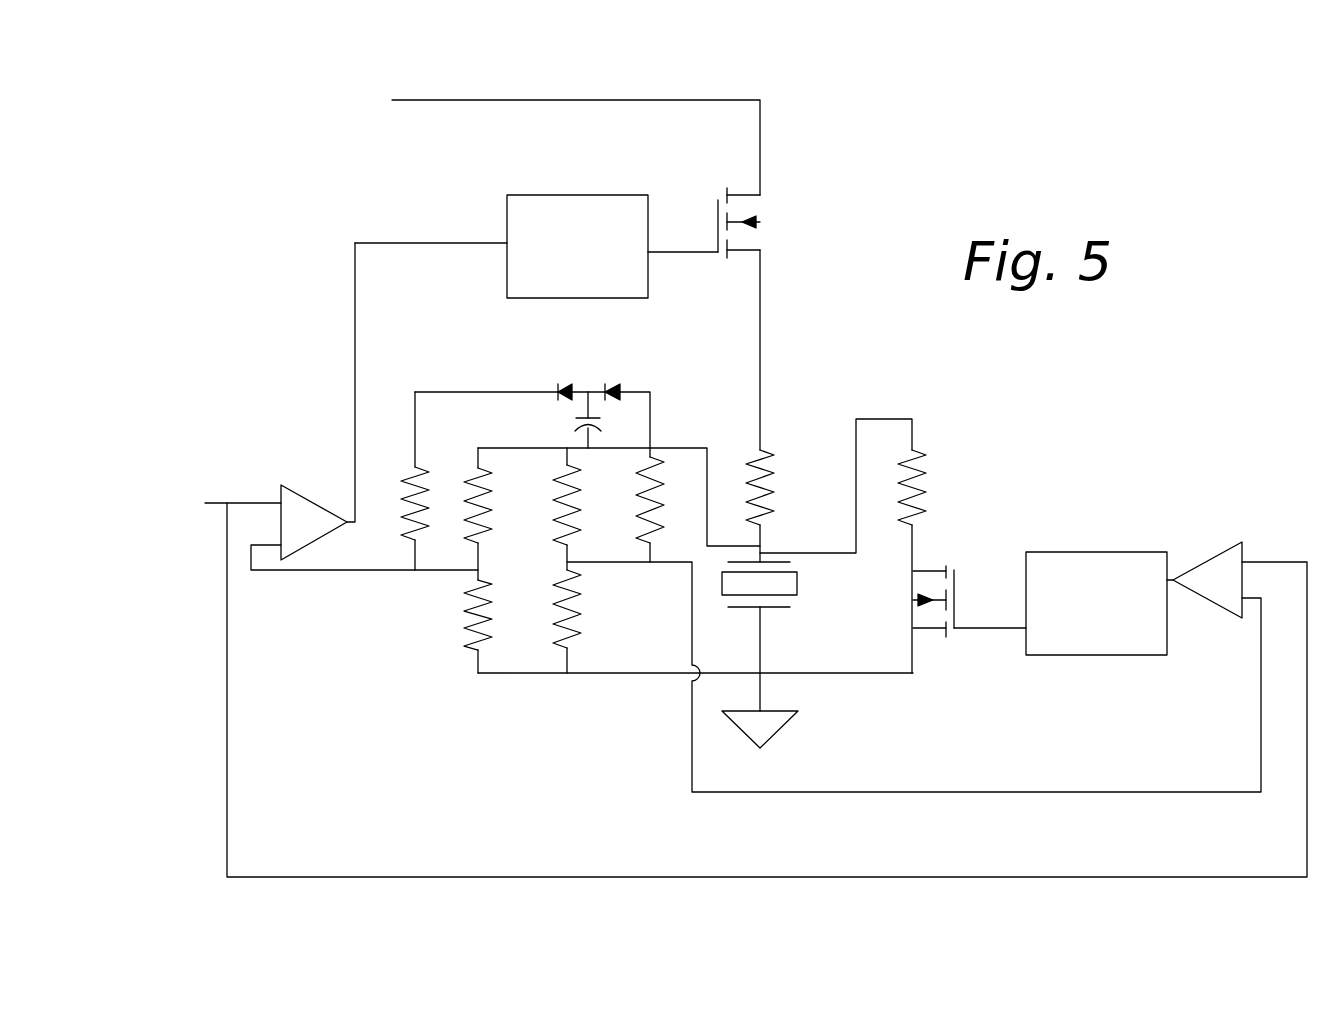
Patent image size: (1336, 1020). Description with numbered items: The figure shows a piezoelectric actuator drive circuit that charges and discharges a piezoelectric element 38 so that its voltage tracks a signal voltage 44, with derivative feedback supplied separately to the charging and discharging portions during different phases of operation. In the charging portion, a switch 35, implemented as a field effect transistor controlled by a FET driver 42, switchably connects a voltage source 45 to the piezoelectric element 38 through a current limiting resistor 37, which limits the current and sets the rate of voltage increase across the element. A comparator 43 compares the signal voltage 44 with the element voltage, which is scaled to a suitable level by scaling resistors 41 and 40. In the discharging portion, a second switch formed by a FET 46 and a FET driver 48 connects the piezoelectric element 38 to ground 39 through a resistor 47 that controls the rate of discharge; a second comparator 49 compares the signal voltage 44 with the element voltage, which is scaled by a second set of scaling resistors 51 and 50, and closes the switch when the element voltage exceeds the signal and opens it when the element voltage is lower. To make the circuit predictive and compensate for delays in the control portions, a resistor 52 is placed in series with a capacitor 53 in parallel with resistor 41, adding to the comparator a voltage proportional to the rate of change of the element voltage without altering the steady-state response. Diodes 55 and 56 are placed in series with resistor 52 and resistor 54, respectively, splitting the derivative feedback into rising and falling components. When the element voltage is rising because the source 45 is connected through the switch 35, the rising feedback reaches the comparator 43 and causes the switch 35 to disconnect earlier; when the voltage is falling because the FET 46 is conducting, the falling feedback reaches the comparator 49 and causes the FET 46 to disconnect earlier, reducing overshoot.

The switch 35 is at (762, 223).
The current limiting resistor 37 is at (770, 454).
The piezoelectric element 38 is at (797, 593).
The ground 39 is at (788, 722).
The scaling resistor 40 is at (464, 650).
The scaling resistor 41 is at (490, 499).
The FET driver 42 is at (577, 246).
The comparator 43 is at (314, 522).
The signal voltage 44 is at (160, 498).
The voltage source 45 is at (345, 101).
The FET 46 is at (948, 568).
The resistor 47 is at (922, 456).
The FET driver 48 is at (1096, 603).
The second comparator 49 is at (1207, 580).
The scaling resistor 50 is at (556, 619).
The scaling resistor 51 is at (554, 539).
The resistor 52 is at (408, 484).
The capacitor 53 is at (577, 421).
The resistor 54 is at (646, 511).
The diode 55 is at (557, 388).
The diode 56 is at (606, 388).